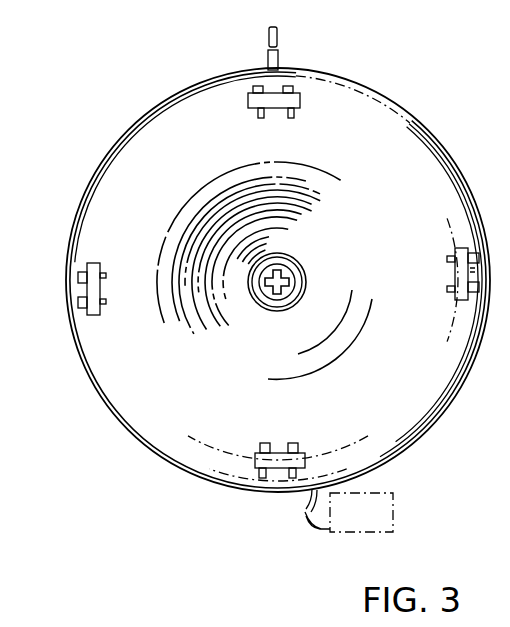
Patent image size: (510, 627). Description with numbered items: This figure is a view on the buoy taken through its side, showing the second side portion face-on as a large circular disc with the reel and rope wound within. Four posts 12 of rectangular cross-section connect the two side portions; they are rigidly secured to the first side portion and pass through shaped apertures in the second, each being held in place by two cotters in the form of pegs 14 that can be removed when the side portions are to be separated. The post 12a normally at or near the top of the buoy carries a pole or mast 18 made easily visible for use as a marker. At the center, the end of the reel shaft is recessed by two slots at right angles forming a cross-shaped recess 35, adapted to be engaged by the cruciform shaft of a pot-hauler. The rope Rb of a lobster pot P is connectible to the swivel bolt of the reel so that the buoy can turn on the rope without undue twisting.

The post 12 is at (94, 316).
The post 12a is at (300, 103).
The peg 14 is at (288, 86).
The pole or mast 18 is at (268, 39).
The cross-shaped recess 35 is at (290, 270).
The lobster pot P is at (394, 507).
The rope Rb is at (305, 527).